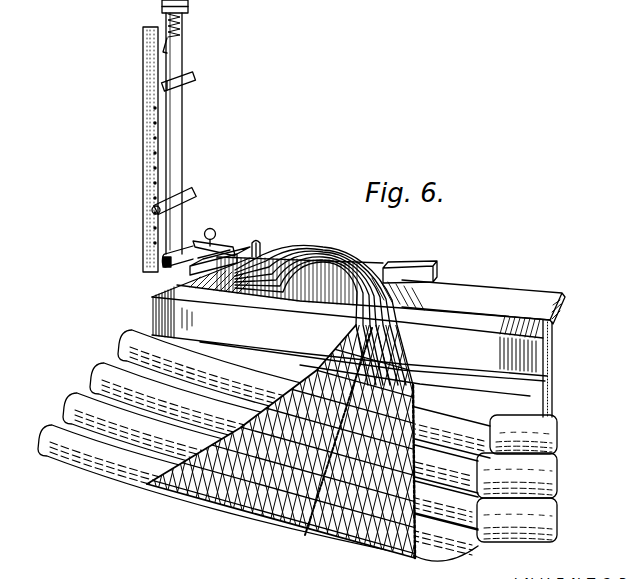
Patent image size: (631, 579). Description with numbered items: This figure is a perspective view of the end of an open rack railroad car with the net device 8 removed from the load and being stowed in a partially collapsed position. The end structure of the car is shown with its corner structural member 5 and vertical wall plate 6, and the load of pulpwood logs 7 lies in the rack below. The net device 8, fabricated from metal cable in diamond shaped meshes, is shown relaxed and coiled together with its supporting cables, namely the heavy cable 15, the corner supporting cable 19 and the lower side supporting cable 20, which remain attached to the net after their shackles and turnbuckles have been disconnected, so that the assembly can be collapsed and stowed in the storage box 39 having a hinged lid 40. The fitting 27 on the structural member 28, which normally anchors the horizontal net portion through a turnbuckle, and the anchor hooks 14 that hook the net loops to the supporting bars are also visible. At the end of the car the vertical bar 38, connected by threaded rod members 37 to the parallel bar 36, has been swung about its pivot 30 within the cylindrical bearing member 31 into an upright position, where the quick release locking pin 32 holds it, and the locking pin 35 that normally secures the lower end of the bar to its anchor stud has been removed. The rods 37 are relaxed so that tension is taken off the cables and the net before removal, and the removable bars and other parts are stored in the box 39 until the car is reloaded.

The corner structural member 5 is at (531, 357).
The vertical wall plate 6 is at (552, 393).
The logs 7 is at (76, 393).
The net device 8 is at (230, 495).
The anchor hooks 14 is at (162, 136).
The heavy cable 15 is at (366, 337).
The corner supporting cable 19 is at (305, 527).
The lower side supporting cable 20 is at (282, 437).
The fitting 27 is at (256, 241).
The structural member 28 is at (397, 266).
The pivot 30 is at (187, 266).
The cylindrical bearing member 31 is at (185, 248).
The quick release locking pin 32 is at (210, 237).
The locking pin 35 is at (181, 50).
The bar 36 is at (143, 123).
The threaded rod members 37 is at (188, 92).
The vertical bar 38 is at (181, 132).
The storage box 39 is at (324, 304).
The hinged lid 40 is at (472, 285).